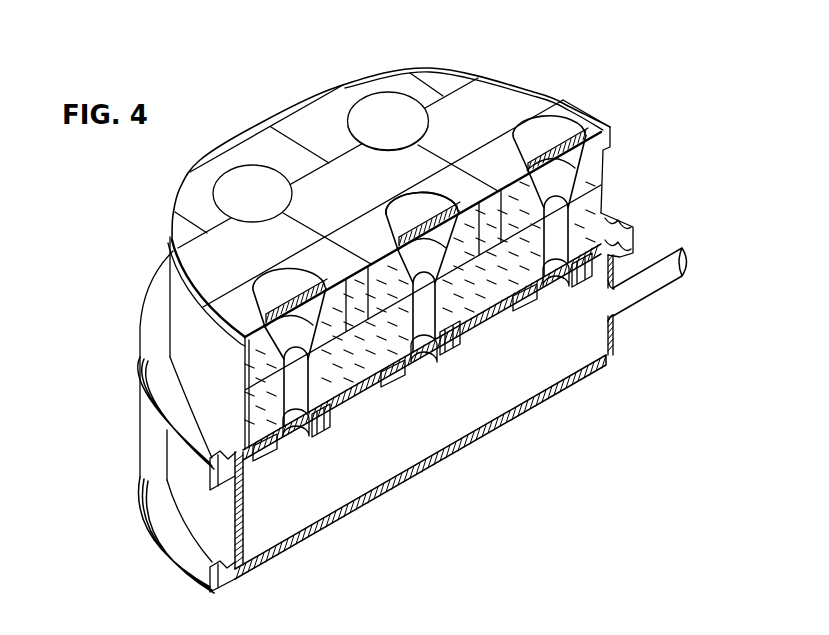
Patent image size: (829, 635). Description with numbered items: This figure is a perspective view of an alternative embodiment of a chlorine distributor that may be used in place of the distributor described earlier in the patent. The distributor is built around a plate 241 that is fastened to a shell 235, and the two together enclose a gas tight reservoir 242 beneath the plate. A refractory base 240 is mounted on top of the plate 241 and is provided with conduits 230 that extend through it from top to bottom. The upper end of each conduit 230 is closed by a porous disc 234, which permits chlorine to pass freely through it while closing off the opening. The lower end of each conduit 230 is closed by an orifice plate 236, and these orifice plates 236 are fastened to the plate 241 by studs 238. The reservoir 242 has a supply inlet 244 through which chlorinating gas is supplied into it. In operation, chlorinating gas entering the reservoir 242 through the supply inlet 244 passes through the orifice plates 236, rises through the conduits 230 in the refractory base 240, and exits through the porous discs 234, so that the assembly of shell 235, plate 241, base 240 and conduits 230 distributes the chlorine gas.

The conduits 230 is at (423, 300).
The porous discs 234 is at (404, 213).
The shell 235 is at (366, 505).
The orifice plates 236 is at (432, 364).
The studs 238 is at (459, 356).
The refractory base 240 is at (387, 277).
The plate 241 is at (362, 390).
The gas tight reservoir 242 is at (304, 510).
The supply inlet 244 is at (657, 291).